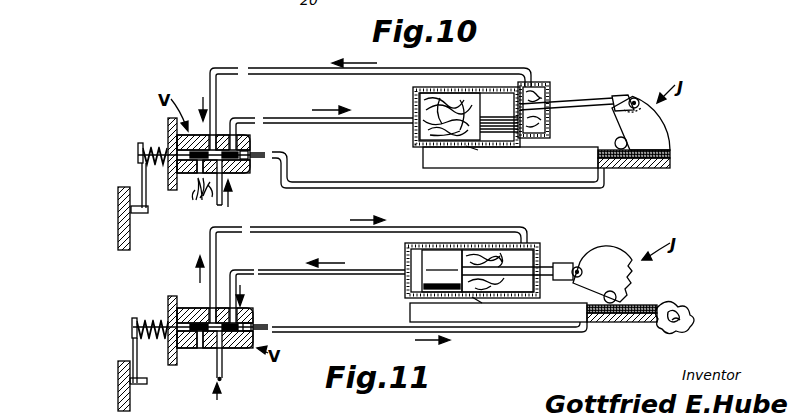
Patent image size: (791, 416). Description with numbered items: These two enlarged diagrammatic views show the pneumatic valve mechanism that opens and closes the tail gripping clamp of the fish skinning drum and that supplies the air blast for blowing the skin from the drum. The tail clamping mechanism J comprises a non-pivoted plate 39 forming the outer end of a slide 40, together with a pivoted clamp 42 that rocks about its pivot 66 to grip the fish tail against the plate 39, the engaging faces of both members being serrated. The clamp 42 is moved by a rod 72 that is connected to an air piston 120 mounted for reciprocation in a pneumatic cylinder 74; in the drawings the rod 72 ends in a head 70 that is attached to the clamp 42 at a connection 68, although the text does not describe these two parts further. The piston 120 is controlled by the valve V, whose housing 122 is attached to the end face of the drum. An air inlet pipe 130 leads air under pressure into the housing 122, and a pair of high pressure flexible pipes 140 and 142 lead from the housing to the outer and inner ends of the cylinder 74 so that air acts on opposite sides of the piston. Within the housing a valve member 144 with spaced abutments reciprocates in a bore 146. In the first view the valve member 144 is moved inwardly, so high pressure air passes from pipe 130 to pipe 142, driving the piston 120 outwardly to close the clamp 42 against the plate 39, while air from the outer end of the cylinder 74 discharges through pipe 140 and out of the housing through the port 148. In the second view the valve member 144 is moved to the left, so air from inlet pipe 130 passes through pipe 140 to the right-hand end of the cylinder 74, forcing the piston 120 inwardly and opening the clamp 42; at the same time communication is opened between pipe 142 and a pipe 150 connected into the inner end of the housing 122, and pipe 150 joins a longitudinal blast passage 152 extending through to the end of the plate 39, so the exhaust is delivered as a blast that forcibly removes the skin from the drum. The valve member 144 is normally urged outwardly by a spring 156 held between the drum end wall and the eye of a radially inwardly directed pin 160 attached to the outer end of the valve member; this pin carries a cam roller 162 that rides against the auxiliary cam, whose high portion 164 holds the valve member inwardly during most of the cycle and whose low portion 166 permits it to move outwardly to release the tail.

In FIG. 10, the non-pivoted plate 39 is at (658, 168).
In FIG. 11, the non-pivoted plate 39 is at (620, 325).
In FIG. 10, the slide 40 is at (423, 160).
In FIG. 11, the slide 40 is at (498, 309).
In FIG. 10, the pivoted clamp 42 is at (654, 120).
In FIG. 11, the pivoted clamp 42 is at (610, 255).
In FIG. 10, the pivot 66 is at (616, 141).
In FIG. 11, the pivot 66 is at (614, 295).
In FIG. 10, the pivot 68 is at (638, 98).
In FIG. 11, the pivot 68 is at (577, 267).
In FIG. 10, the rod head 70 is at (618, 96).
In FIG. 11, the rod head 70 is at (563, 271).
In FIG. 10, the rod 72 is at (582, 102).
In FIG. 11, the rod 72 is at (507, 271).
In FIG. 10, the pneumatic cylinder 74 is at (500, 87).
In FIG. 11, the pneumatic cylinder 74 is at (472, 248).
In FIG. 10, the air piston 120 is at (486, 97).
In FIG. 11, the air piston 120 is at (440, 260).
In FIG. 10, the valve housing 122 is at (221, 132).
In FIG. 11, the valve housing 122 is at (197, 290).
In FIG. 10, the air inlet pipe 130 is at (215, 199).
In FIG. 11, the air inlet pipe 130 is at (221, 363).
In FIG. 10, the high pressure flexible pipe 140 is at (292, 53).
In FIG. 11, the high pressure flexible pipe 140 is at (282, 227).
In FIG. 10, the high pressure flexible pipe 142 is at (277, 118).
In FIG. 11, the high pressure flexible pipe 142 is at (346, 277).
In FIG. 10, the valve member 144 is at (201, 140).
In FIG. 11, the valve member 144 is at (200, 323).
In FIG. 10, the bore 146 is at (252, 143).
In FIG. 10, the port 148 is at (198, 180).
In FIG. 11, the port 148 is at (199, 352).
In FIG. 10, the pipe 150 is at (373, 172).
In FIG. 11, the pipe 150 is at (340, 327).
In FIG. 11, the blast passage 152 is at (257, 323).
In FIG. 10, the spring 156 is at (155, 142).
In FIG. 11, the spring 156 is at (153, 315).
In FIG. 10, the pin 160 is at (142, 180).
In FIG. 11, the pin 160 is at (133, 352).
In FIG. 10, the cam roller 162 is at (141, 216).
In FIG. 11, the cam roller 162 is at (135, 390).
In FIG. 10, the high portion 164 is at (125, 205).
In FIG. 11, the low portion 166 is at (120, 383).